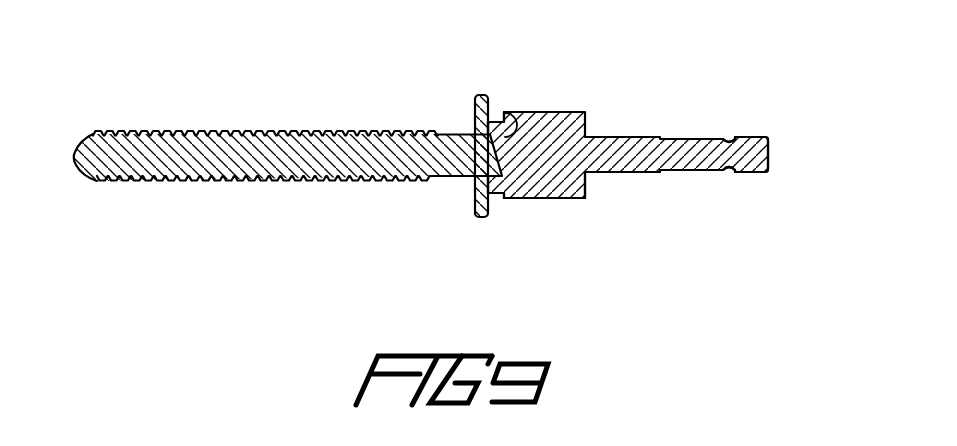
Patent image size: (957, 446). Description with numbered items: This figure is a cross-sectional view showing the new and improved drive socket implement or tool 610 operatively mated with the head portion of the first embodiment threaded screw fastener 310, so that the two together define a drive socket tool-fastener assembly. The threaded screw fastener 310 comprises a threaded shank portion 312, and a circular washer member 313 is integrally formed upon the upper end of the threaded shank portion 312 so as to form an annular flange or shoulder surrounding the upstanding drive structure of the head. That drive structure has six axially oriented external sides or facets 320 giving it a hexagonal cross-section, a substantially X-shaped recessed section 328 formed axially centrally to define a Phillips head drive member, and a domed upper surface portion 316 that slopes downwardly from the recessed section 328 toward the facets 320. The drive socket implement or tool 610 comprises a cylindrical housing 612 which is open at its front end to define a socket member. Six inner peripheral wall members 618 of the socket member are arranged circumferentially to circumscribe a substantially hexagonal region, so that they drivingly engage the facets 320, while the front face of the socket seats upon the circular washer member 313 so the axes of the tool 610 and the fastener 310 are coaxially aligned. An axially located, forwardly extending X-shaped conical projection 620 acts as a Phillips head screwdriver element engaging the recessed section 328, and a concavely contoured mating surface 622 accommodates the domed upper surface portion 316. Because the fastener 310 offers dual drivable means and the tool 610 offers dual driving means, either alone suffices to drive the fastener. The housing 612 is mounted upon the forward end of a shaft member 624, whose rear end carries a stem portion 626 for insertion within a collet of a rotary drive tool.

The threaded screw fastener 310 is at (342, 179).
The threaded shank portion 312 is at (310, 182).
The circular washer member 313 is at (478, 218).
The upper surface portion 316 is at (520, 199).
The external sides or facets 320 is at (498, 199).
The X-shaped recessed section 328 is at (516, 112).
The drive socket implement or tool 610 is at (591, 115).
The cylindrical housing 612 is at (564, 112).
The inner peripheral wall members 618 is at (474, 128).
The X-shaped conical projection 620 is at (498, 162).
The concavely contoured mating surface 622 is at (507, 112).
The shaft member 624 is at (708, 136).
The stem portion 626 is at (762, 172).